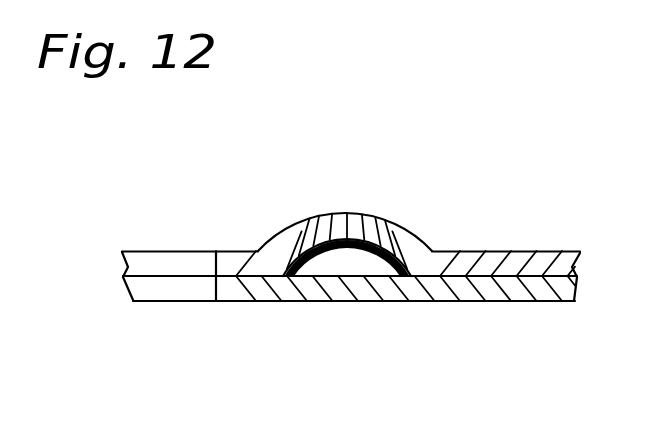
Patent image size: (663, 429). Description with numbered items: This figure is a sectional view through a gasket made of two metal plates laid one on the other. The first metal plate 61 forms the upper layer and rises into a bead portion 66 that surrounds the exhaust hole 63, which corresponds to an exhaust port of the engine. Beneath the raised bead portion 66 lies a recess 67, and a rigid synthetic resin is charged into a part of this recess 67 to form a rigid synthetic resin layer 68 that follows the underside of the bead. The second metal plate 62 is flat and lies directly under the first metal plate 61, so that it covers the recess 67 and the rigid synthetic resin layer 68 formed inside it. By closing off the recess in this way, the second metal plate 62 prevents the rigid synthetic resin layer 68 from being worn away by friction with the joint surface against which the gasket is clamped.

The first metal plate 61 is at (542, 265).
The second metal plate 62 is at (525, 295).
The exhaust hole 63 is at (165, 283).
The bead portion 66 is at (350, 226).
The recess 67 is at (308, 278).
The rigid synthetic resin layer 68 is at (357, 246).